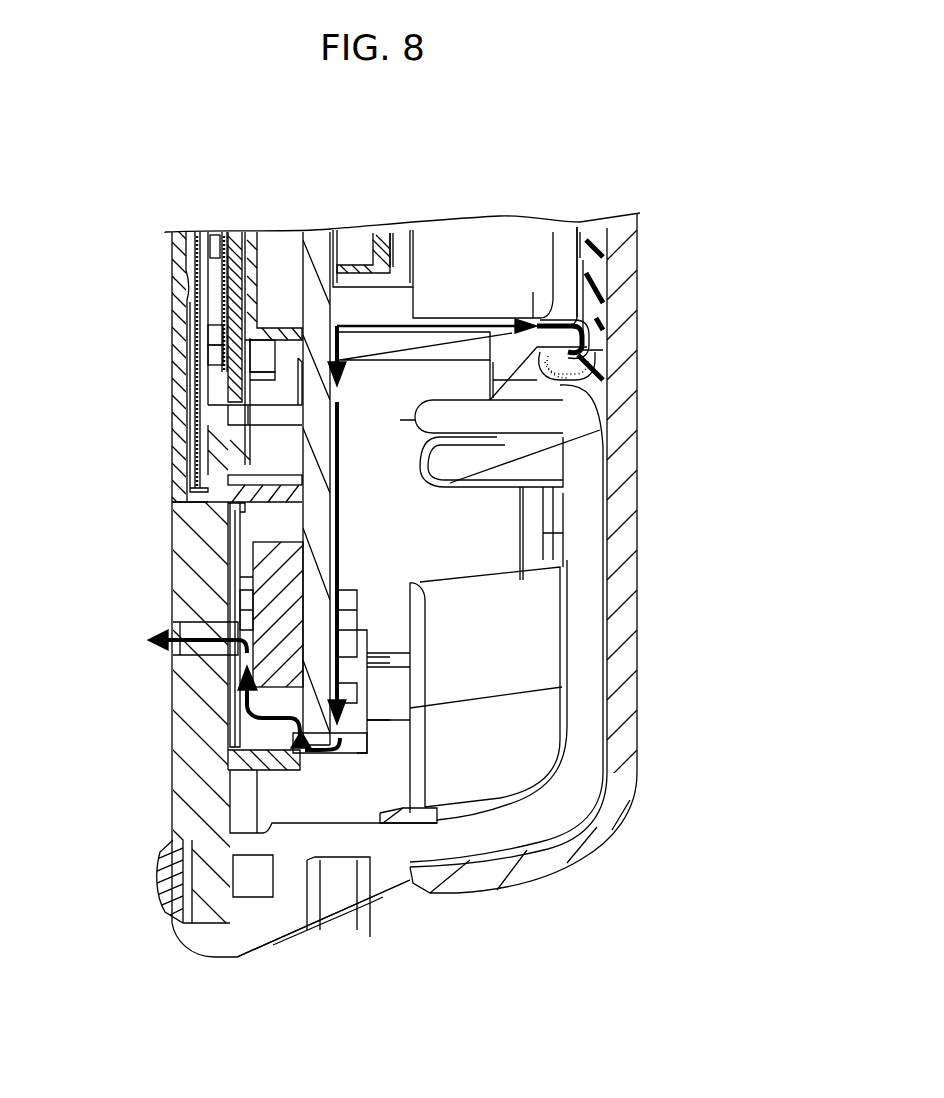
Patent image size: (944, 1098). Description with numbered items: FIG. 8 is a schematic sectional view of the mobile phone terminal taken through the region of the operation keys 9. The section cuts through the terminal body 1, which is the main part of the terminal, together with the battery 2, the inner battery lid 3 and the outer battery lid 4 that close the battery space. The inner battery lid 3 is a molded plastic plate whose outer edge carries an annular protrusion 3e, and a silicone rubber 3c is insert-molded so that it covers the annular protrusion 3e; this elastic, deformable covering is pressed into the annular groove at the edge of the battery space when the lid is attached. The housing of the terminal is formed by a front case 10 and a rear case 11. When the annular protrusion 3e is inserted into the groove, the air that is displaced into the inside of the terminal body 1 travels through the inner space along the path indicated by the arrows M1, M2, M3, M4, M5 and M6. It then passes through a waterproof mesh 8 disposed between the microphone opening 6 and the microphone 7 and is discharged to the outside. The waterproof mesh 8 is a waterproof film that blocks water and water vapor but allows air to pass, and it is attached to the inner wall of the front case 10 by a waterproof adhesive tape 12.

The terminal body 1 is at (423, 980).
The battery 2 is at (432, 245).
The inner battery lid 3 is at (600, 283).
The silicone rubber 3c is at (603, 390).
The annular protrusion 3e is at (600, 363).
The outer battery lid 4 is at (630, 605).
The microphone opening 6 is at (166, 623).
The microphone 7 is at (262, 548).
The waterproof mesh 8 is at (240, 620).
The operation keys 9 is at (138, 318).
The front case 10 is at (182, 832).
The rear case 11 is at (277, 952).
The waterproof adhesive tape 12 is at (245, 570).
The arrow M1 is at (531, 247).
The arrow M2 is at (333, 322).
The arrow M3 is at (341, 547).
The arrow M4 is at (320, 762).
The arrow M5 is at (258, 718).
The arrow M6 is at (158, 652).